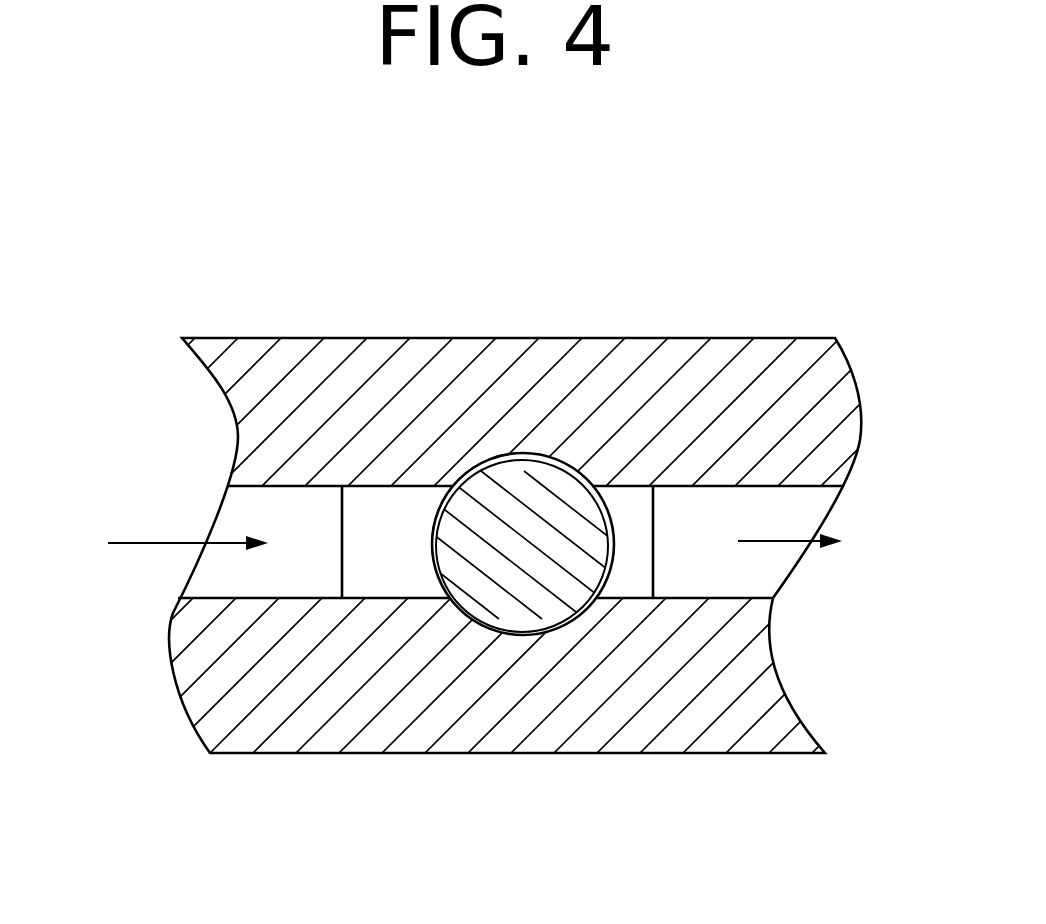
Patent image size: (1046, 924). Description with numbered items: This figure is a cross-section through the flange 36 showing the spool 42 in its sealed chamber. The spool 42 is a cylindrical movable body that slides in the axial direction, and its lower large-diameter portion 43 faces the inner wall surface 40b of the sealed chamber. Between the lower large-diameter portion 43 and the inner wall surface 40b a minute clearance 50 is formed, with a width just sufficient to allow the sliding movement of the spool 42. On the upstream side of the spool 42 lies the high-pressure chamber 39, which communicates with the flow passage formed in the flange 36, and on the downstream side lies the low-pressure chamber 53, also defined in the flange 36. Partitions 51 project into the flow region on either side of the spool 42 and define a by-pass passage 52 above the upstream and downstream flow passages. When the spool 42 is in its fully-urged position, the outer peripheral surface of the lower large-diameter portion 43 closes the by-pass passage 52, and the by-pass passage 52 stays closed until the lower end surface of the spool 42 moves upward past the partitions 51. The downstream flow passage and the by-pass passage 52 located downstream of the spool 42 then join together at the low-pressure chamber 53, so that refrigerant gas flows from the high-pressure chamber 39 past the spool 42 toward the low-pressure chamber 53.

The flange 36 is at (265, 387).
The high-pressure chamber 39 is at (220, 580).
The inner wall surface of the sealed chamber 40b is at (506, 624).
The spool 42 is at (555, 580).
The lower large-diameter portion 43 is at (613, 483).
The minute clearance 50 is at (492, 462).
The partitions 51 is at (340, 510).
The by-pass passage 52 is at (388, 573).
The low-pressure chamber 53 is at (763, 575).